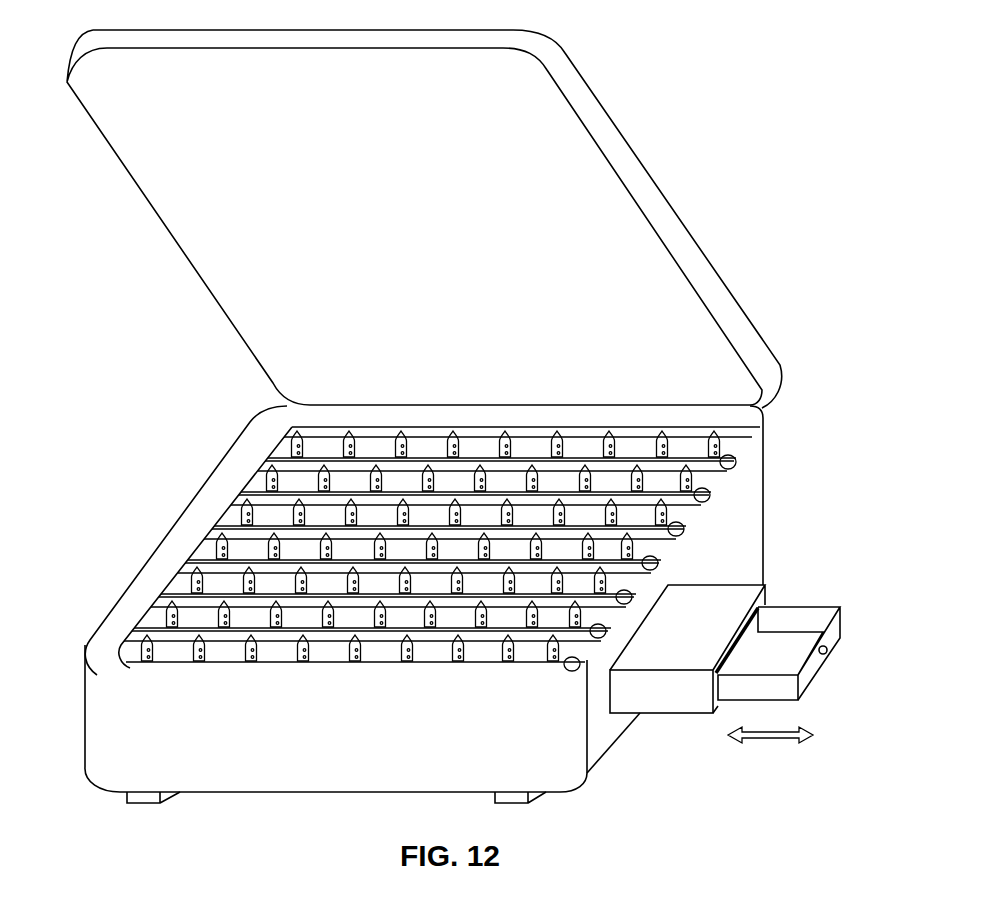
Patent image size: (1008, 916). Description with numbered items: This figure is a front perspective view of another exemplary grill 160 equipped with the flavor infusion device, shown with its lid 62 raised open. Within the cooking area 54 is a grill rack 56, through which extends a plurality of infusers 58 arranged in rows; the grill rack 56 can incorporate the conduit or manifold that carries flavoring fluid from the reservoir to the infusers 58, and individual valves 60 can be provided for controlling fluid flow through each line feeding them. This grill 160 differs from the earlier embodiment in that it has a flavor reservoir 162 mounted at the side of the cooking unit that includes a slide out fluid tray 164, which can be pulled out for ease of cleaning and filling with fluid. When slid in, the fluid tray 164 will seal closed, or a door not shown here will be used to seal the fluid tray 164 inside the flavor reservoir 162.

The grill 160 is at (160, 348).
The lid 62 is at (623, 175).
The grill rack 56 is at (177, 598).
The cooking area 54 is at (205, 566).
The infusers 58 is at (267, 477).
The valves 60 is at (733, 462).
The flavor reservoir 162 is at (667, 745).
The fluid tray 164 is at (780, 693).